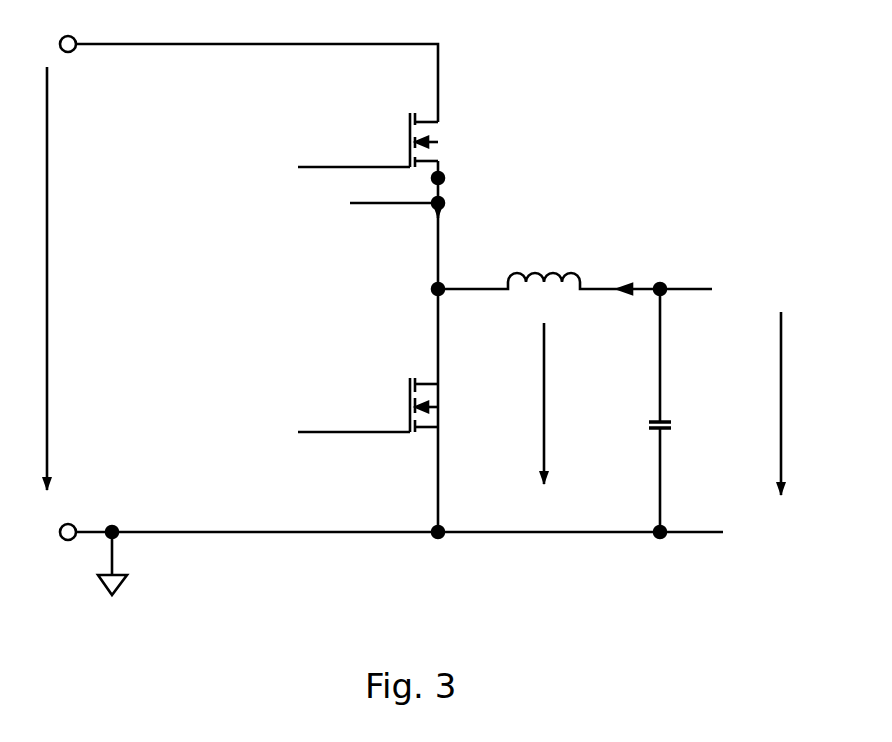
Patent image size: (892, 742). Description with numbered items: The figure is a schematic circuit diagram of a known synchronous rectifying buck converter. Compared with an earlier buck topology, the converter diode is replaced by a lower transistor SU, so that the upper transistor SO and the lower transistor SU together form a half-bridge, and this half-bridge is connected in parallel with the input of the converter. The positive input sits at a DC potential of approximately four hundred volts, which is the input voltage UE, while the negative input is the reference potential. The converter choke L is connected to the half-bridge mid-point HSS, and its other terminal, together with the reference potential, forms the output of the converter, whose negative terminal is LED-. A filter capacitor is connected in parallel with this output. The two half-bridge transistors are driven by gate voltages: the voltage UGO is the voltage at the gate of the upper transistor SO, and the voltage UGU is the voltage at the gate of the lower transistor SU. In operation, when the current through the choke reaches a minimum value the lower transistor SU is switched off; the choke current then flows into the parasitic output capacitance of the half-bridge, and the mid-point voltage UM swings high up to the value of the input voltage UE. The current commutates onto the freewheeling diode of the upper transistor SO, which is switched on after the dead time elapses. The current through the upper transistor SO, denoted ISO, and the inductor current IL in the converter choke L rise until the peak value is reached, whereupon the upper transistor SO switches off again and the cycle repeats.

The input voltage UE is at (71, 278).
The upper transistor SO is at (451, 140).
The lower transistor SU is at (446, 405).
The gate voltage of the upper transistor UGO is at (323, 170).
The gate voltage of the lower transistor UGU is at (323, 435).
The half-bridge mid-point HSS is at (369, 202).
The current through upper switch ISO is at (463, 225).
The converter choke L is at (549, 268).
The inductor current IL is at (622, 275).
The negative output terminal LED- is at (755, 533).
The mid-point voltage UM is at (566, 403).
The output voltage UA is at (804, 403).